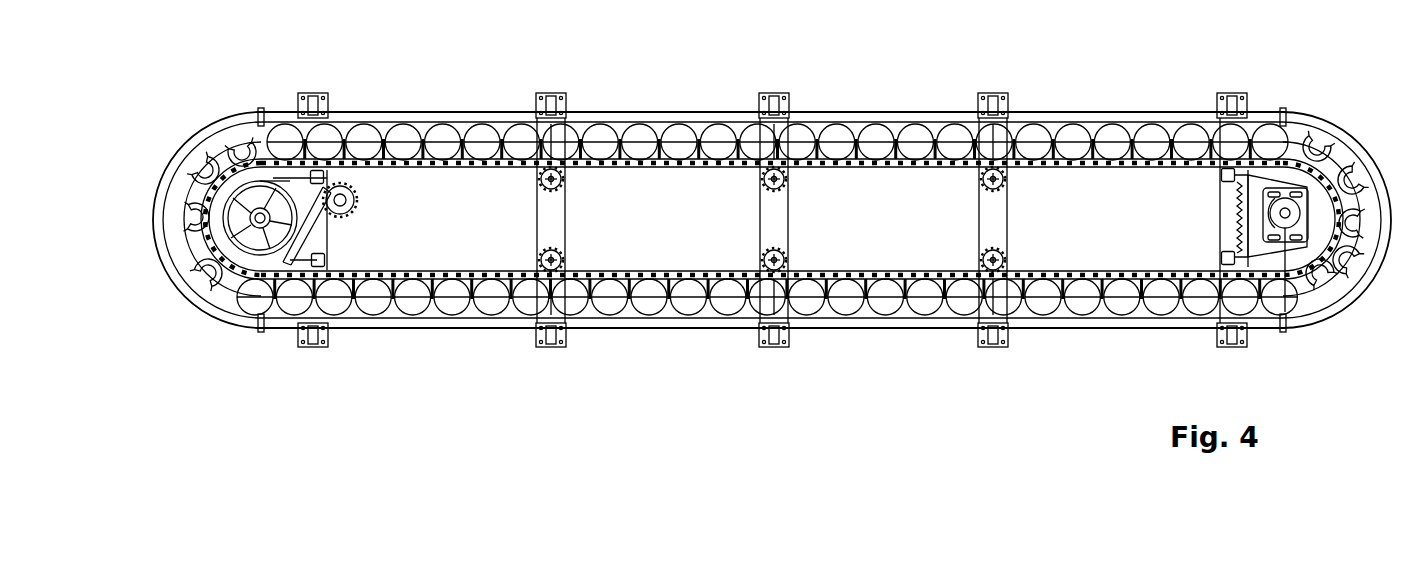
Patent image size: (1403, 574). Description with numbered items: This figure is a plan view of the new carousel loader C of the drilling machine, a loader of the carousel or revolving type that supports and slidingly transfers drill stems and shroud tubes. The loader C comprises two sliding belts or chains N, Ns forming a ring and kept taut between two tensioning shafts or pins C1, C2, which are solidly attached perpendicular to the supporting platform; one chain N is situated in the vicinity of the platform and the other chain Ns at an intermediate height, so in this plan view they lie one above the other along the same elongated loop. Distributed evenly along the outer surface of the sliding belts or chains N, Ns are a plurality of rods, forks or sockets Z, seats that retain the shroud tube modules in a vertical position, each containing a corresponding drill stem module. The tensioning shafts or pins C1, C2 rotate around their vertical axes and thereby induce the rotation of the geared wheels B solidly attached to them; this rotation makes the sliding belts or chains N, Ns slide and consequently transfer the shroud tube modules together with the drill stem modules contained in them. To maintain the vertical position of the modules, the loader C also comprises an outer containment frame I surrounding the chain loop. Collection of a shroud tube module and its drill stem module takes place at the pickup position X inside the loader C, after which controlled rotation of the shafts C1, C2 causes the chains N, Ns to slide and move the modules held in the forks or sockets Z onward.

The tensioning shaft or pin C1 is at (259, 214).
The tensioning shaft or pin C2 is at (1287, 210).
The geared wheel B is at (274, 180).
The sliding belt or chain N is at (425, 165).
The sliding belt or chain Ns is at (772, 219).
The outer containment frame I is at (886, 112).
The pickup position X is at (204, 276).
The rods, forks or sockets Z is at (1336, 264).
The carousel loader C is at (695, 393).